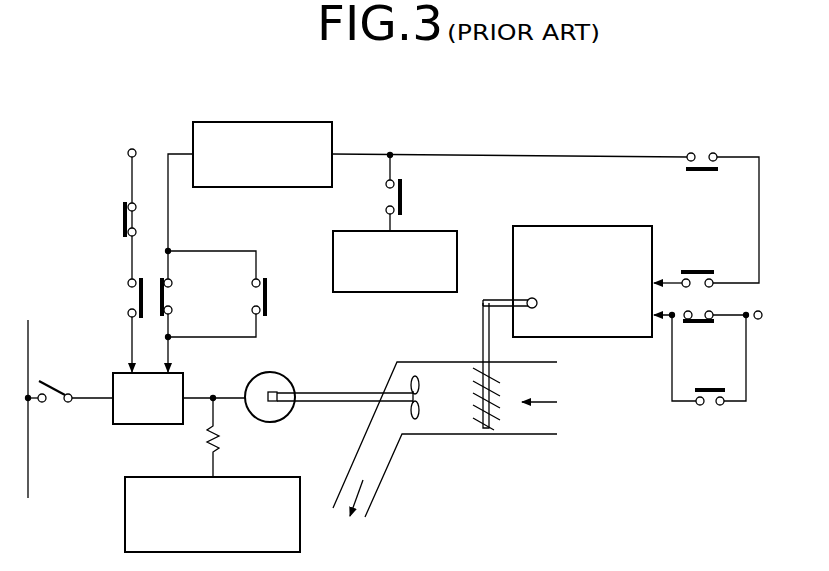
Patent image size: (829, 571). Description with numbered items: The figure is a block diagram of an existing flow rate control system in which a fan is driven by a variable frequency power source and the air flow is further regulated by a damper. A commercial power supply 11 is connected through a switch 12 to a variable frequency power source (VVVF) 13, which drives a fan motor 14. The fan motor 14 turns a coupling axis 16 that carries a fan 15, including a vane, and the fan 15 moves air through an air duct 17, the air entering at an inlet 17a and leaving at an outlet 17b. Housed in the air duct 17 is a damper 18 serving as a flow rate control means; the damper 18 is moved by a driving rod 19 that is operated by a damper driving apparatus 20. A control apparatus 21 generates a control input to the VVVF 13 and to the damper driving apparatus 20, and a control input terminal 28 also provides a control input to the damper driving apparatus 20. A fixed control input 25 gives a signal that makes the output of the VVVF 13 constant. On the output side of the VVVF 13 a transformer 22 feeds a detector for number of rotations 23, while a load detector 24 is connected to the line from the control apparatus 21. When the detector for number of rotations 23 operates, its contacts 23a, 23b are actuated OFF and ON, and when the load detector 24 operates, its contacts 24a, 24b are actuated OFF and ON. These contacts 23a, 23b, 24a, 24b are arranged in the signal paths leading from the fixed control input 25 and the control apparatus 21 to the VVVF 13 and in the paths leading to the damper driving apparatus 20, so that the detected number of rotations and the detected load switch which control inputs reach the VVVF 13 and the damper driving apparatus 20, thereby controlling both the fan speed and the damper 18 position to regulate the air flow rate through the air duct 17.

The commercial power supply 11 is at (30, 336).
The switch 12 is at (52, 403).
The variable frequency power source (VVVF) 13 is at (150, 424).
The fan motor 14 is at (278, 378).
The fan 15 is at (419, 389).
The coupling axis 16 is at (346, 380).
The air duct 17 is at (397, 452).
The inlet 17a is at (557, 402).
The outlet 17b is at (360, 492).
The damper 18 is at (472, 430).
The driving rod 19 is at (483, 322).
The damper driving apparatus 20 is at (585, 224).
The control apparatus 21 is at (290, 122).
The transformer 22 is at (219, 440).
The detector for number of rotations 23 is at (125, 513).
The contact 23a is at (139, 300).
The contact 23b is at (164, 298).
The load detector 24 is at (457, 263).
The contact 24a is at (268, 298).
The contact 24b is at (122, 219).
The fixed control input 25 is at (132, 148).
The control input terminal 28 is at (758, 310).